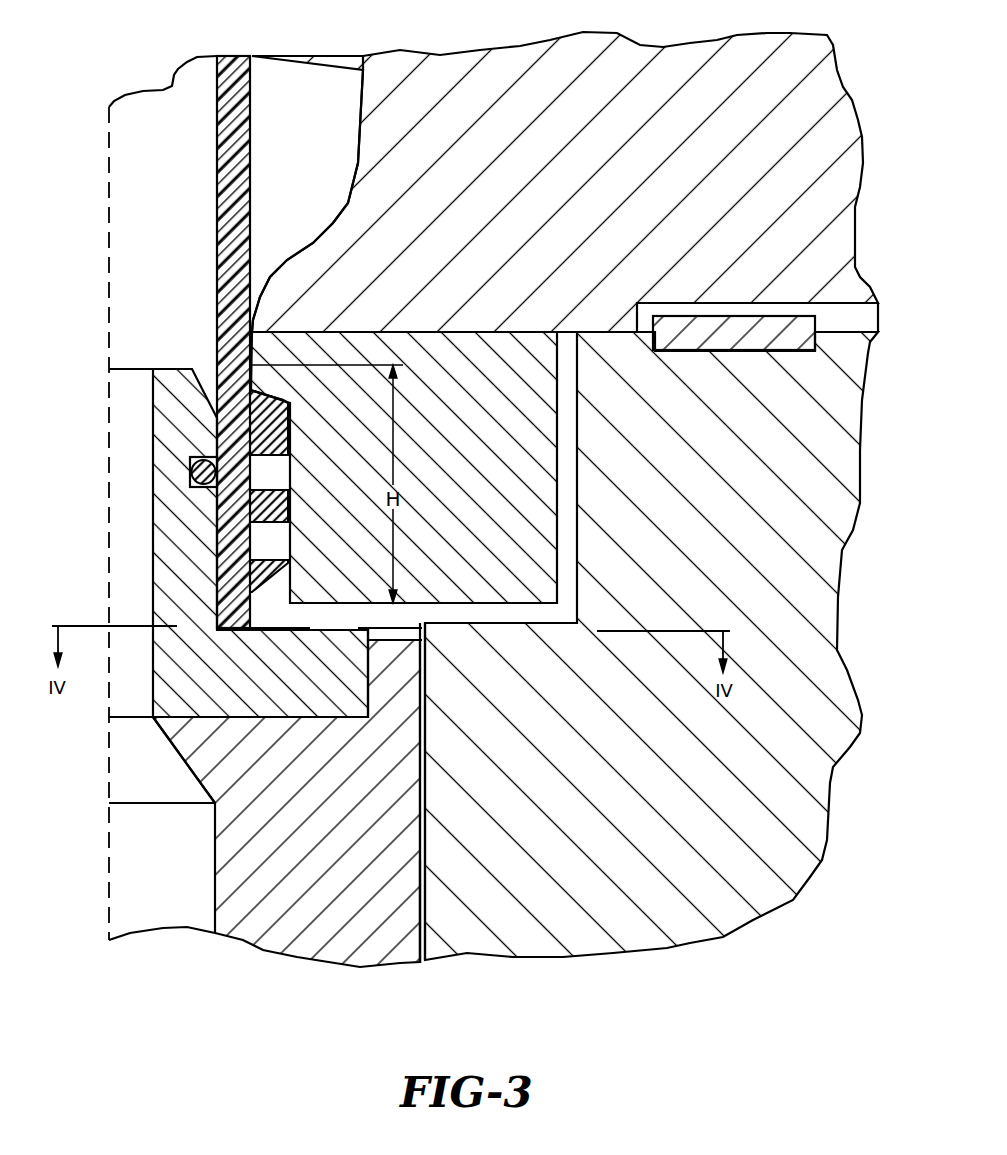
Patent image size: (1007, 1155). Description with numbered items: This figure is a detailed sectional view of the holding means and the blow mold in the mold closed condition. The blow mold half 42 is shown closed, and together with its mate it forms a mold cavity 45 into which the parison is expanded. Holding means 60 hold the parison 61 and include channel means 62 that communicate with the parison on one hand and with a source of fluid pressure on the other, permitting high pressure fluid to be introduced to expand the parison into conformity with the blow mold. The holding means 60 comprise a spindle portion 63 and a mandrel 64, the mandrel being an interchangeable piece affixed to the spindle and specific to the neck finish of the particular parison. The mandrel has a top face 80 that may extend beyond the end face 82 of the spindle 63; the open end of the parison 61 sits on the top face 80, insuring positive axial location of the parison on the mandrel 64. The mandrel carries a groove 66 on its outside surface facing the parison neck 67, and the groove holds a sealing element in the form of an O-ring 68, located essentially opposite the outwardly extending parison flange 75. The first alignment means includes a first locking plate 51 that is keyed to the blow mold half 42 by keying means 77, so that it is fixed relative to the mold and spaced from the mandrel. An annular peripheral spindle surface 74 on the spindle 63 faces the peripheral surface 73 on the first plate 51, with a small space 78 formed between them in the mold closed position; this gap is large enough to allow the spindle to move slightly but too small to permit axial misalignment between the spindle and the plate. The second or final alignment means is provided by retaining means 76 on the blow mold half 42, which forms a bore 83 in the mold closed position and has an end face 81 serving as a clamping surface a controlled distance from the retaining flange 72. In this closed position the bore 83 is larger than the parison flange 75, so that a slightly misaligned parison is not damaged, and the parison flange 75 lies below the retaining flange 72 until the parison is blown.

The blow mold half 42 is at (607, 159).
The mold cavity 45 is at (290, 149).
The first locking plate 51 is at (710, 548).
The holding means 60 is at (165, 758).
The parison 61 is at (236, 167).
The channel means 62 is at (128, 907).
The spindle portion 63 is at (318, 879).
The mandrel 64 is at (190, 545).
The groove 66 is at (191, 458).
The parison neck 67 is at (233, 512).
The O-ring 68 is at (191, 473).
The retaining flange 72 is at (250, 390).
The peripheral surface 73 is at (425, 810).
The annular peripheral spindle surface 74 is at (420, 788).
The parison flange 75 is at (216, 418).
The retaining means 76 is at (460, 484).
The keying means 77 is at (722, 335).
The space 78 is at (423, 870).
The top face 80 is at (307, 627).
The end face 81 is at (360, 603).
The end face 82 is at (383, 642).
The bore 83 is at (291, 473).